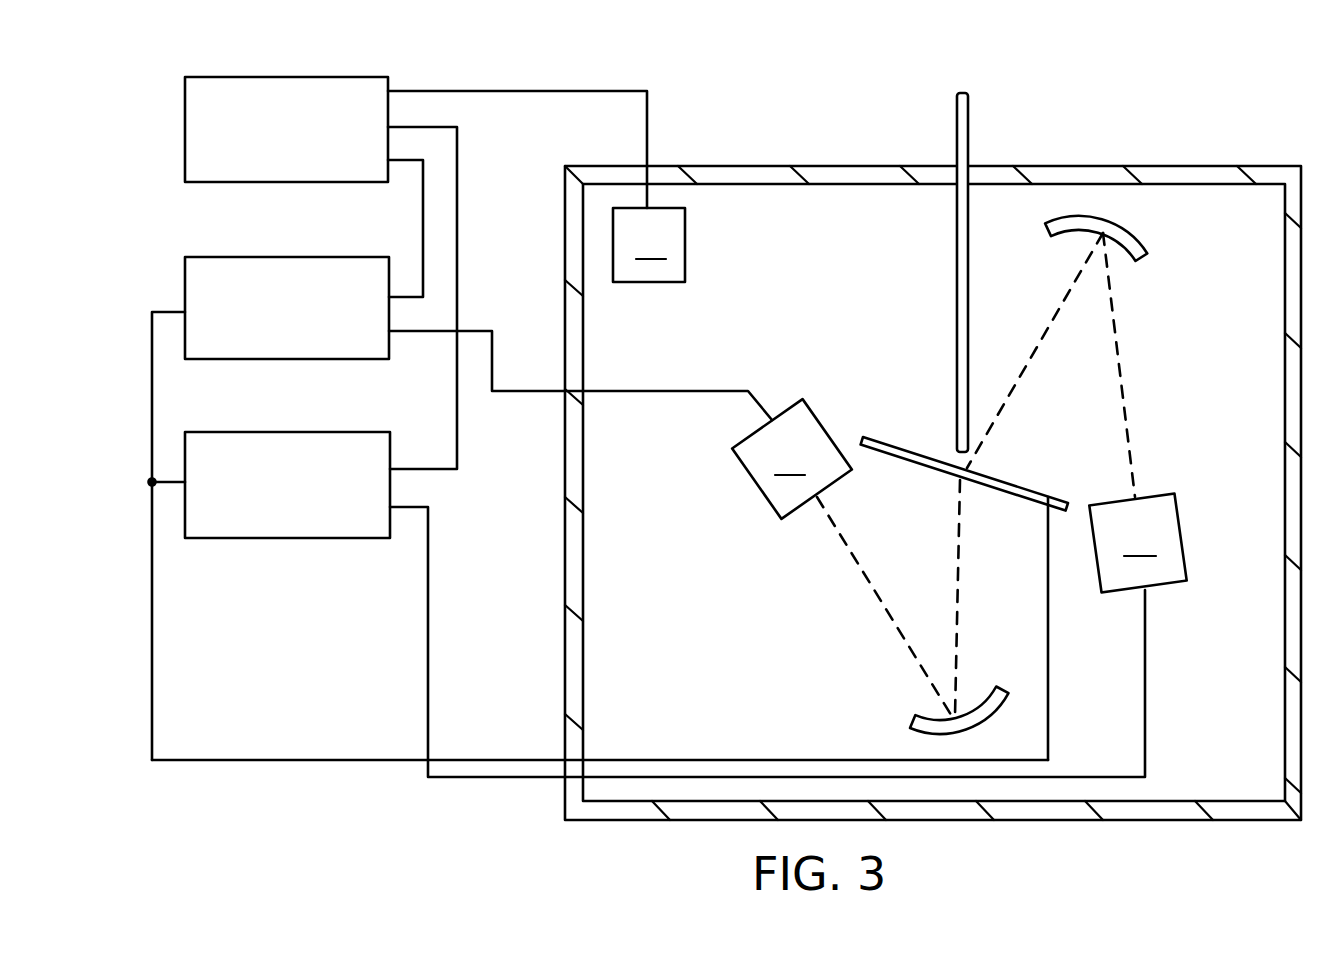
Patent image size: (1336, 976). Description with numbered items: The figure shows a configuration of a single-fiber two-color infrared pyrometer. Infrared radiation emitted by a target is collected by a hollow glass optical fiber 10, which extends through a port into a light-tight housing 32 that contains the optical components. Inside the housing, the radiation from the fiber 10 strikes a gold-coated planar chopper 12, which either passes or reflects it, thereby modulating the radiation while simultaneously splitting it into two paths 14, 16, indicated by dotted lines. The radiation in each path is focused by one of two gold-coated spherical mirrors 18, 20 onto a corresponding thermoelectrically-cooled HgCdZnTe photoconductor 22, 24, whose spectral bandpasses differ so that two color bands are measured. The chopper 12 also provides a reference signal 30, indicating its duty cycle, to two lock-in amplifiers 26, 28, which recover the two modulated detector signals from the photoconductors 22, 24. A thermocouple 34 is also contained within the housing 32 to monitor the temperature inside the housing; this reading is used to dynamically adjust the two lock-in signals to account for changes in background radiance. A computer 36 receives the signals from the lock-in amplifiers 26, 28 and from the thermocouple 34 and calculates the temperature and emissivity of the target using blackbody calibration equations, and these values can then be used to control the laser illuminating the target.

The fiber 10 is at (968, 131).
The chopper 12 is at (900, 443).
The path 14 is at (963, 590).
The path 16 is at (1043, 340).
The spherical mirror 18 is at (908, 722).
The spherical mirror 20 is at (1140, 236).
The photoconductor 22 is at (792, 459).
The photoconductor 24 is at (1137, 542).
The lock-in amplifier 26 is at (275, 257).
The lock-in amplifier 28 is at (275, 432).
The reference signal 30 is at (244, 760).
The light-tight housing 32 is at (1215, 166).
The thermocouple 34 is at (649, 245).
The computer 36 is at (292, 76).